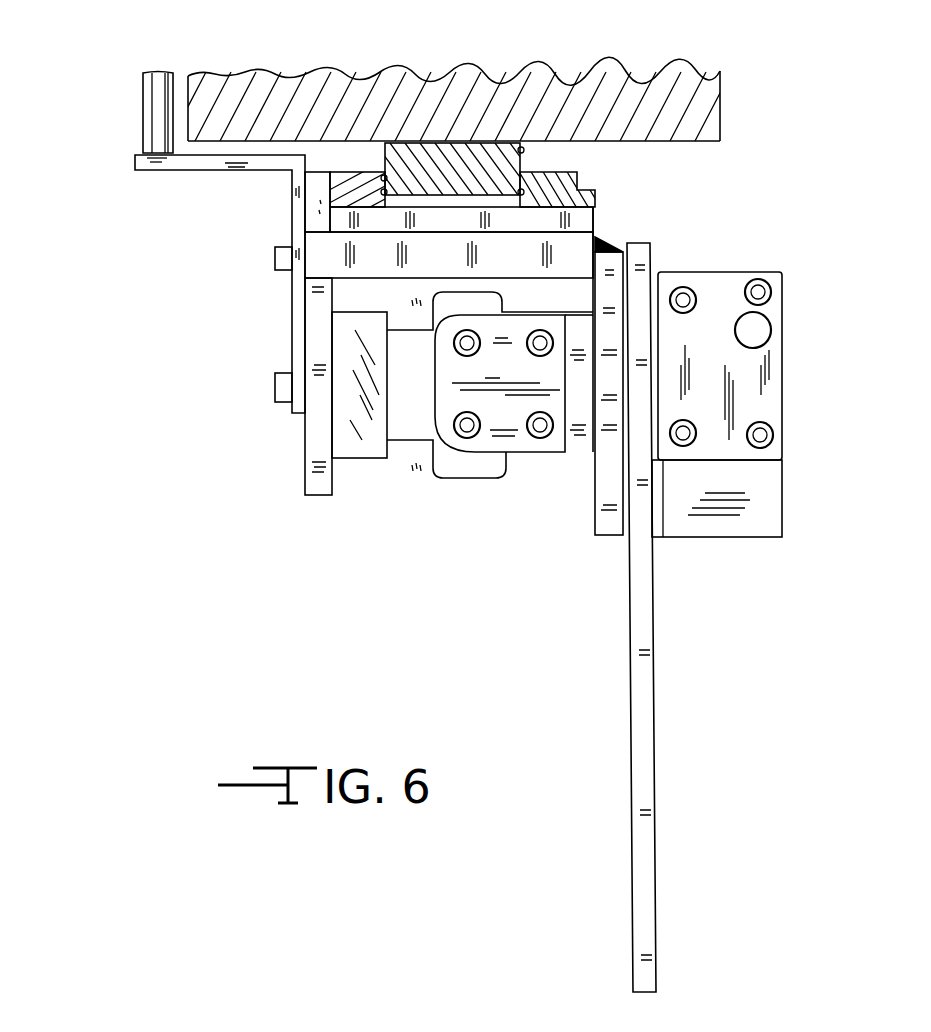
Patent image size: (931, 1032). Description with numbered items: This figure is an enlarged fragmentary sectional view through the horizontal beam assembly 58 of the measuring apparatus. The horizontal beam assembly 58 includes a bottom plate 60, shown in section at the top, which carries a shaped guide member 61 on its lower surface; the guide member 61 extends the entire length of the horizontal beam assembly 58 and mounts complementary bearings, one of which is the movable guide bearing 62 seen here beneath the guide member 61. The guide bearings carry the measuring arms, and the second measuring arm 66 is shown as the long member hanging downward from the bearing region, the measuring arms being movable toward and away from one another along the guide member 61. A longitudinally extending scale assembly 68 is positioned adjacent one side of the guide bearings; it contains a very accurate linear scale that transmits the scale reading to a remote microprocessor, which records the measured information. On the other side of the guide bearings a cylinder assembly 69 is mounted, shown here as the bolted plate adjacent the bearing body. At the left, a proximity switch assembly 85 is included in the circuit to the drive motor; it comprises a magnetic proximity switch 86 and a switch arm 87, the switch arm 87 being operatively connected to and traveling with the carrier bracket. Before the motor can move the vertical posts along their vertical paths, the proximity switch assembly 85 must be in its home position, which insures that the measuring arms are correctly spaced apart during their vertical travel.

The horizontal beam assembly 58 is at (720, 80).
The bottom plate 60 is at (720, 115).
The guide member 61 is at (518, 155).
The movable guide bearing 62 is at (577, 175).
The second measuring arm 66 is at (655, 735).
The scale assembly 68 is at (782, 327).
The cylinder assembly 69 is at (525, 457).
The proximity switch assembly 85 is at (140, 110).
The magnetic proximity switch 86 is at (138, 138).
The switch arm 87 is at (200, 170).